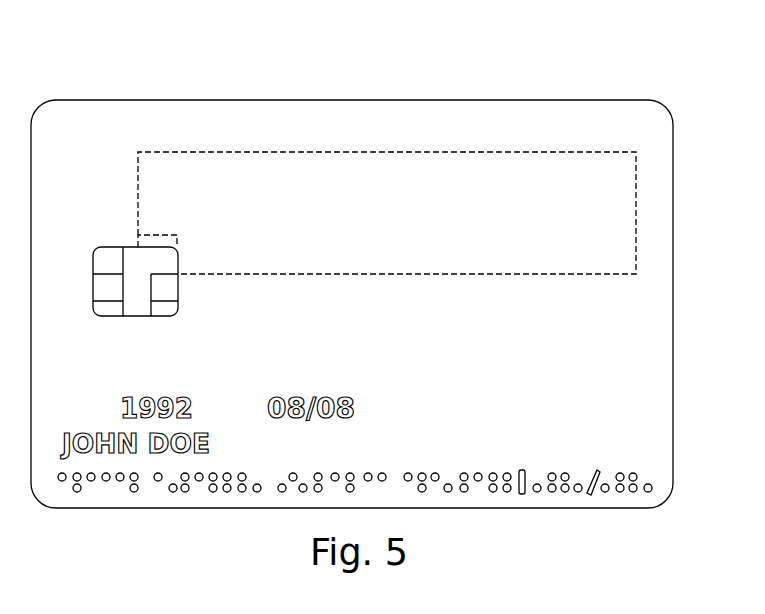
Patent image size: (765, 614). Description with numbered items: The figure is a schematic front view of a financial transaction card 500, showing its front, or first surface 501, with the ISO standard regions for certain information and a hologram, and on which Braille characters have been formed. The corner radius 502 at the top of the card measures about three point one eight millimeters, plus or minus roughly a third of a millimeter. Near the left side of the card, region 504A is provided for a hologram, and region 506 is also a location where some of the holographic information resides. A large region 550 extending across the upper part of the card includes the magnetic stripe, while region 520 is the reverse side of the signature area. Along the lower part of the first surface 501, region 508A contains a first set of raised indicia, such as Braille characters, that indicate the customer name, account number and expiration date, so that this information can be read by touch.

The financial transaction card 500 is at (522, 58).
The first surface 501 is at (585, 112).
The corner radius 502 is at (50, 100).
The hologram region 504A is at (139, 246).
The holographic information region 506 is at (167, 308).
The raised indicia region 508A is at (132, 494).
The signature area reverse side region 520 is at (520, 274).
The magnetic stripe region 550 is at (230, 212).